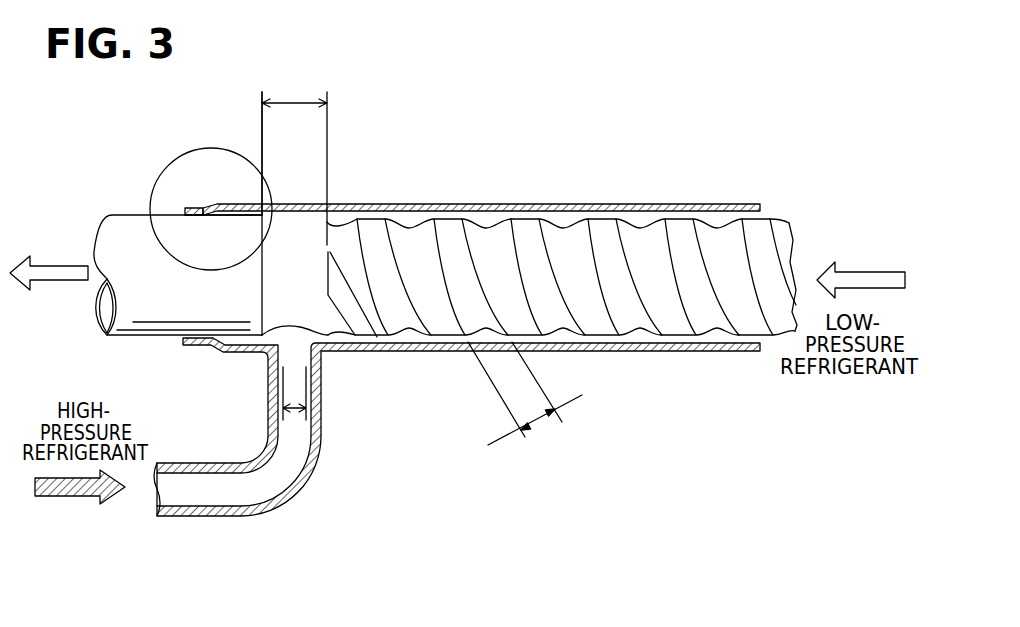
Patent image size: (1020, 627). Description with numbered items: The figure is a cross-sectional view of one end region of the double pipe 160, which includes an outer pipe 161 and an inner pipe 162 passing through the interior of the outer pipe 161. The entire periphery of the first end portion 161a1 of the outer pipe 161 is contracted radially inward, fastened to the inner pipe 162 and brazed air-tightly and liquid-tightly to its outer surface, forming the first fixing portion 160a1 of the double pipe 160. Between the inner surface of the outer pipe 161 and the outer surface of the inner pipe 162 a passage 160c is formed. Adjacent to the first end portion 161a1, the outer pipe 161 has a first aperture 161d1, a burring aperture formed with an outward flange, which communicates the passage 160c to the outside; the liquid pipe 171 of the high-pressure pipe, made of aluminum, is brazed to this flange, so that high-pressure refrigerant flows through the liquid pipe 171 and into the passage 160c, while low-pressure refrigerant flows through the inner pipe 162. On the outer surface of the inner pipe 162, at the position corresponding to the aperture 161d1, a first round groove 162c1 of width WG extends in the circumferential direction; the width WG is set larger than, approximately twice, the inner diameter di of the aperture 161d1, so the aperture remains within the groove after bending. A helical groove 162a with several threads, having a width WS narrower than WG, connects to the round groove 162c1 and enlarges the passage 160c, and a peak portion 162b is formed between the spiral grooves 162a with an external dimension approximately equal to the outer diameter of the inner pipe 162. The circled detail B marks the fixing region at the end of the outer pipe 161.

The double pipe 160 is at (410, 312).
The first fixing portion 160a1 is at (131, 174).
The passage 160c is at (607, 213).
The outer pipe 161 is at (264, 262).
The first end portion 161a1 is at (195, 218).
The first aperture 161d1 is at (293, 353).
The inner pipe 162 is at (504, 199).
The helical groove 162a is at (409, 228).
The peak portion 162b is at (457, 224).
The first round groove 162c1 is at (329, 216).
The liquid pipe 171 is at (220, 516).
The detail region B is at (152, 205).
The width of round groove WG is at (294, 157).
The width of helical groove WS is at (525, 401).
The inner diameter of aperture di is at (297, 403).